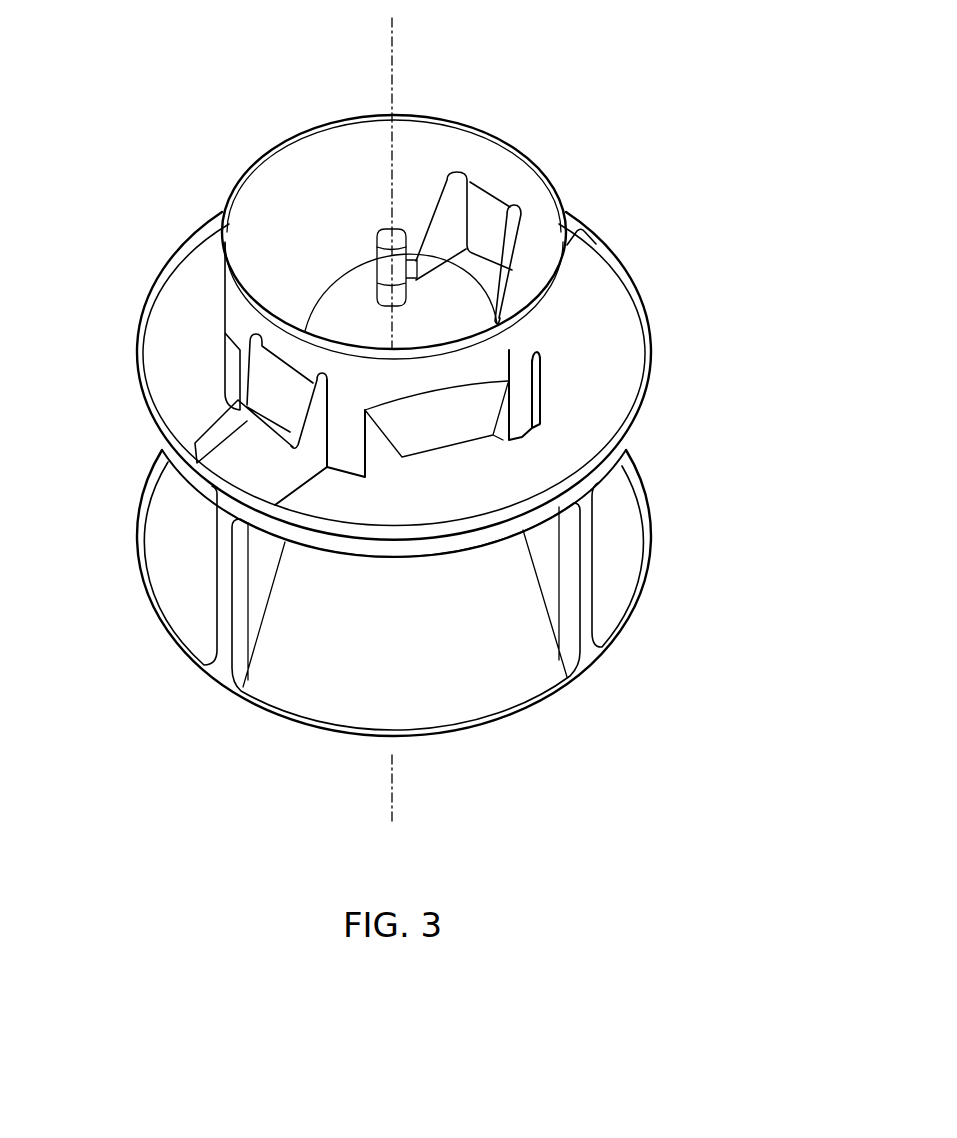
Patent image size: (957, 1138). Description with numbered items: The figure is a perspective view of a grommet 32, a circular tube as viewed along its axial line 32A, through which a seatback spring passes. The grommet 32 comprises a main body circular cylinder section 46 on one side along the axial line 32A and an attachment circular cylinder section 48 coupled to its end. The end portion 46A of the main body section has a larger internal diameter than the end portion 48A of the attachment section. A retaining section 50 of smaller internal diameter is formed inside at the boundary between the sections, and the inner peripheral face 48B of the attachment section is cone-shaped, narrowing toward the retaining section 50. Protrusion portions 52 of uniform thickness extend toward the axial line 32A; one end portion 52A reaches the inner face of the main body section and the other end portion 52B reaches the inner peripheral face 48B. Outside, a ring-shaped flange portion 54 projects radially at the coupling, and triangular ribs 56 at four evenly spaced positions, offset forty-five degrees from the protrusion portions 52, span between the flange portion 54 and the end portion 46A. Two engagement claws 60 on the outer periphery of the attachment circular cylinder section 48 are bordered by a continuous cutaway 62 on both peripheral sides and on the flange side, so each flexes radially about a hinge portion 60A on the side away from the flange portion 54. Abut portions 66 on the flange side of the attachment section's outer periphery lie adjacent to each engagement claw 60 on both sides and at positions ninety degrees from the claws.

The grommet 32 is at (553, 110).
The axial line 32A is at (392, 58).
The main body circular cylinder section 46 is at (652, 477).
The end portion of the main body circular cylinder section 46A is at (517, 723).
The attachment circular cylinder section 48 is at (550, 160).
The end portion of the attachment circular cylinder section 48A is at (255, 163).
The inner peripheral face of the attachment circular cylinder section 48B is at (362, 133).
The retaining section 50 is at (471, 315).
The protrusion portion 52 is at (346, 225).
The one end portion of the protrusion portion 52A is at (370, 298).
The another end portion of the protrusion portion 52B is at (383, 230).
The flange portion 54 is at (129, 365).
The rib 56 is at (222, 600).
The engagement claw 60 is at (318, 277).
The hinge portion 60A is at (487, 214).
The cutaway 62 is at (449, 211).
The abut portion 66 is at (242, 373).